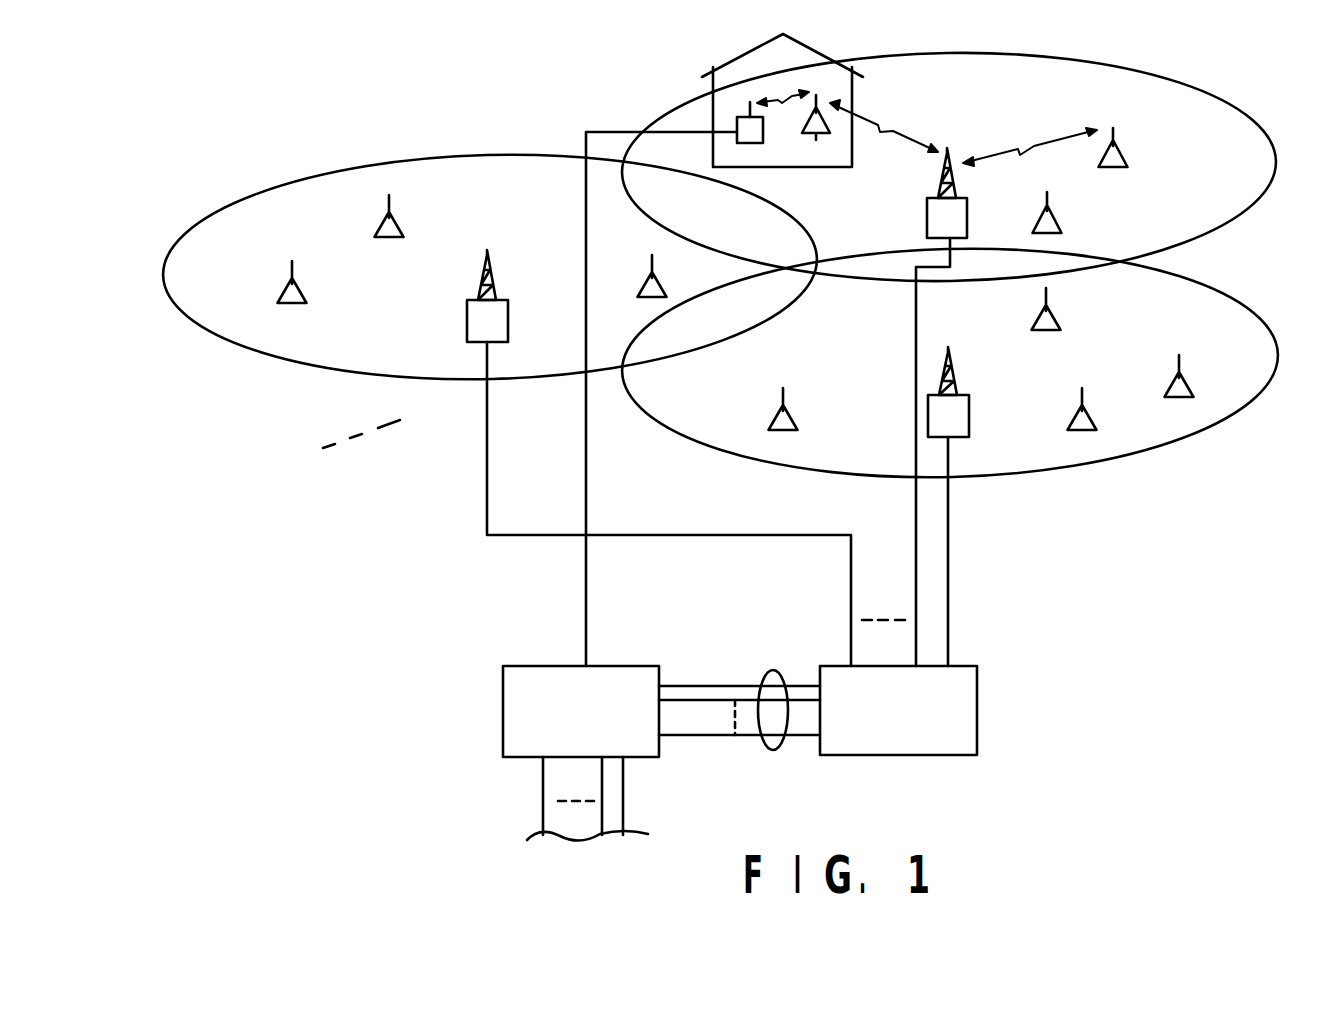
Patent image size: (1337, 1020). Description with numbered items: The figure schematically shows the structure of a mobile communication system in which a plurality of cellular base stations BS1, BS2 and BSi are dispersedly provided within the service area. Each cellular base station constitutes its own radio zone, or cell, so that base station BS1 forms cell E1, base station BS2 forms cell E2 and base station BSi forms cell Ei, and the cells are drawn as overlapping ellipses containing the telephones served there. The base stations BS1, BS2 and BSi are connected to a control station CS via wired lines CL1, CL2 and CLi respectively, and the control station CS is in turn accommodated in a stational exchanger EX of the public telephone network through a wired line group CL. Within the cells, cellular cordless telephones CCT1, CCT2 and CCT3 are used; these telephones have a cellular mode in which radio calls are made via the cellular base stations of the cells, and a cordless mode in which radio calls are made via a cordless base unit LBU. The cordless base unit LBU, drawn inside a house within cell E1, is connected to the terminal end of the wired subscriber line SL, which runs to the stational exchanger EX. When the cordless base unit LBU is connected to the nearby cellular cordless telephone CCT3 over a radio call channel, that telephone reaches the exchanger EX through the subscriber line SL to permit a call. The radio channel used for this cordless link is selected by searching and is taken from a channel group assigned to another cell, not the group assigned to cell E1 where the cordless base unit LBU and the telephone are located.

The radio zone (cell) Ei is at (245, 192).
The radio zone (cell) E1 is at (1233, 113).
The radio zone (cell) E2 is at (1243, 313).
The cellular base station BSi is at (508, 328).
The cellular base station BS1 is at (924, 221).
The cellular base station BS2 is at (969, 420).
The cellular cordless telephone CCT1 is at (1121, 158).
The cellular cordless telephone CCT2 is at (1058, 226).
The cellular cordless telephone CCT3 is at (819, 131).
The cordless base unit LBU is at (752, 143).
The wired subscriber line SL is at (587, 490).
The wired line CLi is at (696, 504).
The wired line CL1 is at (917, 558).
The wired line CL2 is at (976, 551).
The wired line group CL is at (775, 670).
The stational exchanger EX is at (503, 710).
The control station CS is at (977, 715).